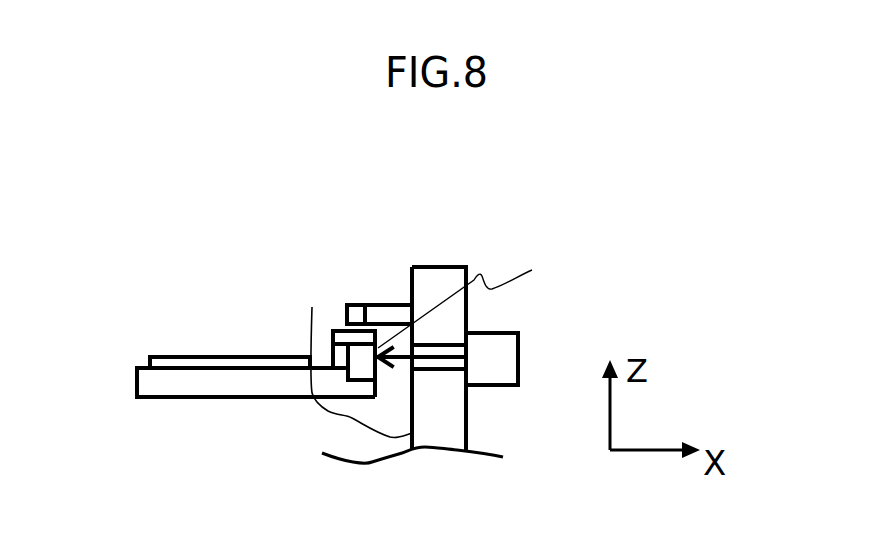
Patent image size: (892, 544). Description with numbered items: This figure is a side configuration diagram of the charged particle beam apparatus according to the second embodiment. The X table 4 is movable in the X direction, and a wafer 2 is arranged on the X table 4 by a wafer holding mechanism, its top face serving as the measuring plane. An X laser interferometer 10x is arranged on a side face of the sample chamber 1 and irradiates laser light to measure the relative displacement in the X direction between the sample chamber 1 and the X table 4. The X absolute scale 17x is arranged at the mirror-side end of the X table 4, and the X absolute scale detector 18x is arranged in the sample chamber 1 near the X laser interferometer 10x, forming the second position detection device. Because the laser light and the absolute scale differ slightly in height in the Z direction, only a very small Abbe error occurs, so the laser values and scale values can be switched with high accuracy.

The X table 4 is at (203, 385).
The wafer 2 is at (240, 355).
The X absolute scale 17x is at (360, 360).
The X absolute scale detector 18x is at (363, 322).
The sample chamber 1 is at (450, 398).
The X laser interferometer 10x is at (477, 363).